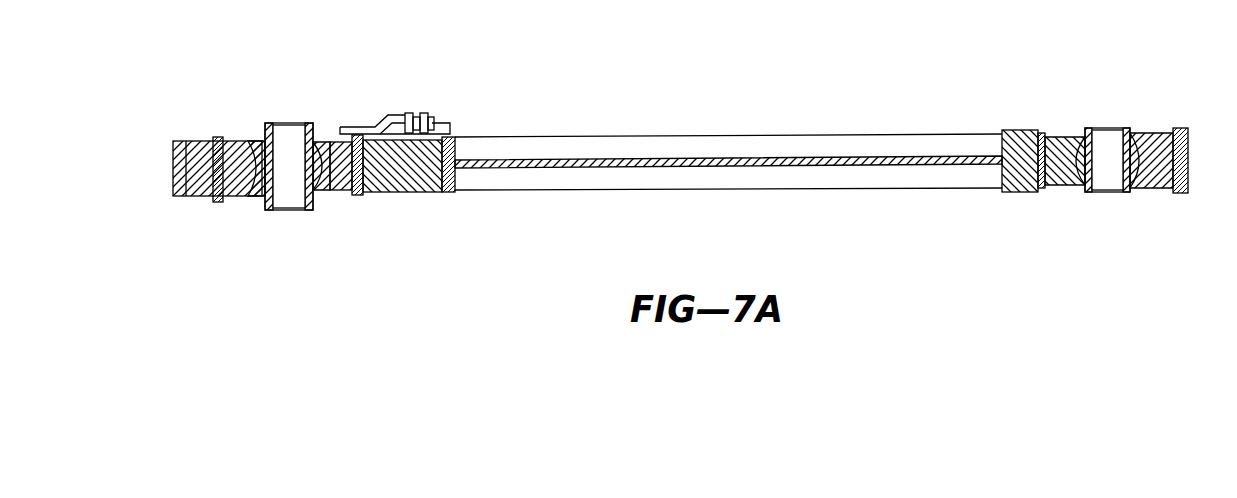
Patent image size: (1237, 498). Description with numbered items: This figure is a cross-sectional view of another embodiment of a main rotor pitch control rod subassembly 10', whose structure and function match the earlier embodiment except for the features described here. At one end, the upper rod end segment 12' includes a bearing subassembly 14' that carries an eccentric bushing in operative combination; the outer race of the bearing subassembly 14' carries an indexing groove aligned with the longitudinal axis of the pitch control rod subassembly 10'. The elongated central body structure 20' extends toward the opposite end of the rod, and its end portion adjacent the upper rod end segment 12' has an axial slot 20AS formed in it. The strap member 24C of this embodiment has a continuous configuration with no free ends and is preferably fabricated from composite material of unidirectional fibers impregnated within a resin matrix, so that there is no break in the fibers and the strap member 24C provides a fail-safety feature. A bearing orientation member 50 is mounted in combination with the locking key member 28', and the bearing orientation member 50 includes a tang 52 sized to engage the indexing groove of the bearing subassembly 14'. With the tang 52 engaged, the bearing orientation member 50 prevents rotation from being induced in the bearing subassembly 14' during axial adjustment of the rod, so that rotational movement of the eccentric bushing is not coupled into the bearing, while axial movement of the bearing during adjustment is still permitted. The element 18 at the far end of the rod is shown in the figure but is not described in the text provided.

The main rotor pitch control rod subassembly 10' is at (750, 124).
The upper rod end segment 12' is at (308, 124).
The bearing subassembly 14' is at (279, 206).
The end coupling 18 is at (1113, 121).
The central body structure 20' is at (728, 124).
The axial slot 20AS is at (397, 192).
The strap member 24C is at (175, 167).
The locking key member 28' is at (472, 105).
The bearing orientation member 50 is at (398, 109).
The tang 52 is at (350, 128).